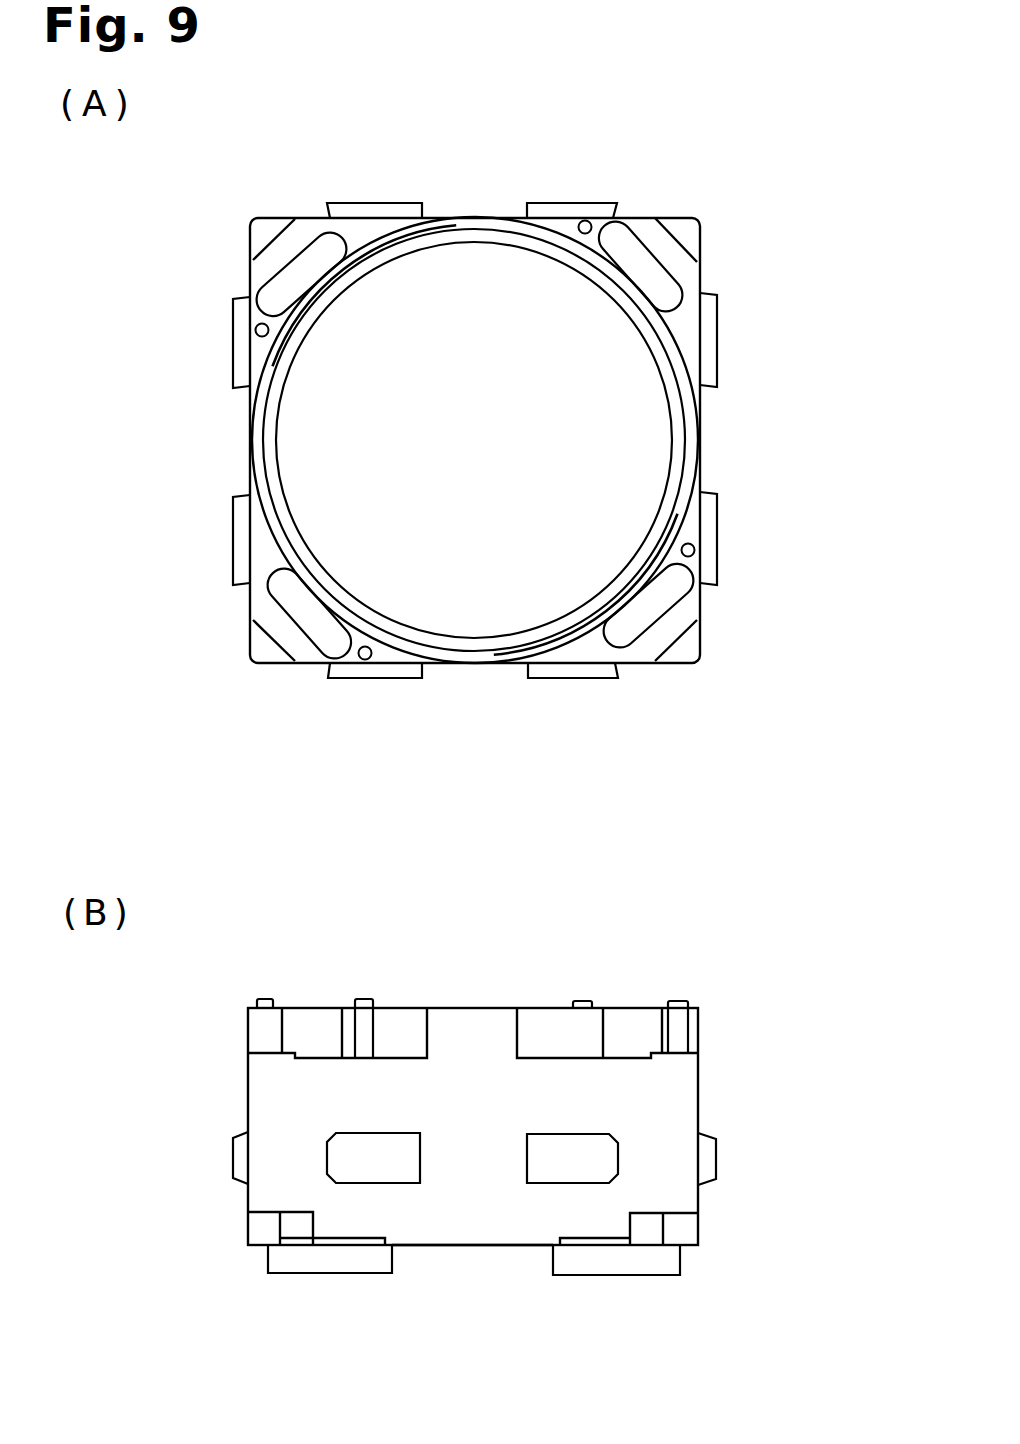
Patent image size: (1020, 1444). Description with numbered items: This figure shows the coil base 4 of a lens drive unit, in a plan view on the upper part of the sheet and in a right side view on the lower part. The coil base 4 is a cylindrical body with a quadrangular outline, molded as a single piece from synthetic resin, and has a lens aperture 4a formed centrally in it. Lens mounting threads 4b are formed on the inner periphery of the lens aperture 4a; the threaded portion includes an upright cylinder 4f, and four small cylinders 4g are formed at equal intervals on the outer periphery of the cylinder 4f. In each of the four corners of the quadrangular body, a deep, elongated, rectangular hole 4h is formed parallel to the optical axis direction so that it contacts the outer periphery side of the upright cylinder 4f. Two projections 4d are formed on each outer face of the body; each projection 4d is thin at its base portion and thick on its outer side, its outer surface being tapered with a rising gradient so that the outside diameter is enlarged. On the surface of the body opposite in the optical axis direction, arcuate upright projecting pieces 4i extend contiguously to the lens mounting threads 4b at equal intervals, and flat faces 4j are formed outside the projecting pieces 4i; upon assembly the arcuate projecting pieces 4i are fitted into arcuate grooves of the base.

The coil base 4 is at (720, 215).
The lens aperture 4a is at (635, 452).
The lens mounting threads 4b is at (285, 508).
The projections 4d is at (380, 203).
The upright cylinder 4f is at (608, 292).
The small cylinders 4g is at (582, 222).
The rectangular holes 4h is at (322, 258).
The arcuate upright projecting pieces 4i is at (333, 1262).
The flat faces 4j is at (497, 1248).